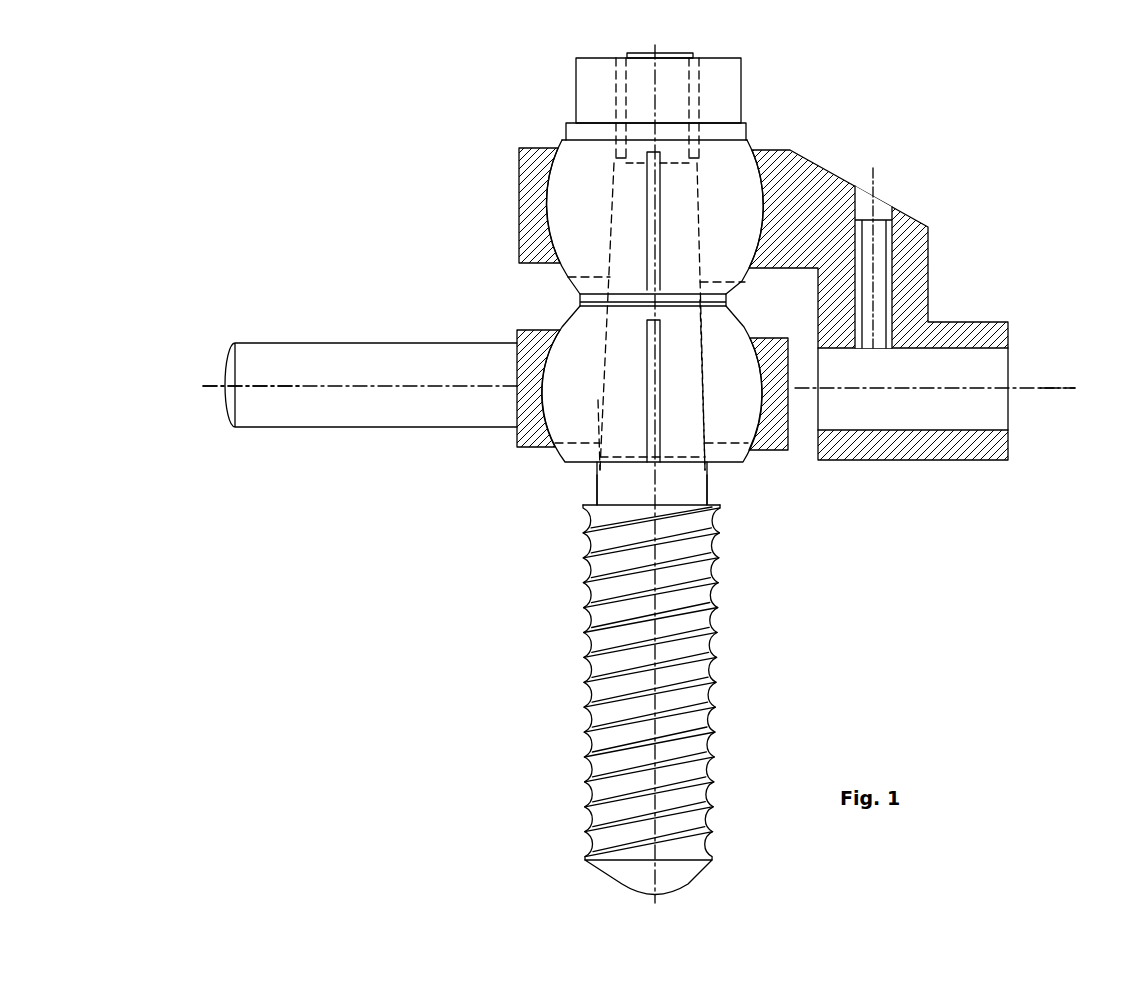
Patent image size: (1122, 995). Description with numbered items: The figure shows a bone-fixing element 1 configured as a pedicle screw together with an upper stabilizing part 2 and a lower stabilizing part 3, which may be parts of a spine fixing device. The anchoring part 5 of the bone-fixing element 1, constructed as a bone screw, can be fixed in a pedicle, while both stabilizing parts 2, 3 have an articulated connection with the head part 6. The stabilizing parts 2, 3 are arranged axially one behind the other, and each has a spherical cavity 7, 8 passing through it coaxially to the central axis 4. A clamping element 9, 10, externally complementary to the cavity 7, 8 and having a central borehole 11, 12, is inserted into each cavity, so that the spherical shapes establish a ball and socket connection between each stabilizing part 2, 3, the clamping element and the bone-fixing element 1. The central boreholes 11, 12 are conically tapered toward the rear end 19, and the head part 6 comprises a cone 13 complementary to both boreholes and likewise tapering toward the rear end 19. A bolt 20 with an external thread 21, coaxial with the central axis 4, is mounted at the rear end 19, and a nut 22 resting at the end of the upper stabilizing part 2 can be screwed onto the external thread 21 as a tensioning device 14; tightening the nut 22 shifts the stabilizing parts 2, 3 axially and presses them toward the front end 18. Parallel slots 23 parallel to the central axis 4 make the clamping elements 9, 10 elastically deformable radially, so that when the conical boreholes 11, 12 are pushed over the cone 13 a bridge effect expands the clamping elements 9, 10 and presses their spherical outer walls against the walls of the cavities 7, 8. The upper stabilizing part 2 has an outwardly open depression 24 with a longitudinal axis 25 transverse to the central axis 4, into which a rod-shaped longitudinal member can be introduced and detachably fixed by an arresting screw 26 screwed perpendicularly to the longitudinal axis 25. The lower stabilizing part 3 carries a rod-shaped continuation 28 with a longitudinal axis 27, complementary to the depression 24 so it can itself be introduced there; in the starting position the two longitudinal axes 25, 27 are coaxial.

The bone-fixing element 1 is at (732, 581).
The upper stabilizing part 2 is at (798, 192).
The lower stabilizing part 3 is at (548, 405).
The central axis 4 is at (645, 678).
The anchoring part 5 is at (687, 737).
The head part 6 is at (682, 478).
The spherical cavity 7 is at (552, 198).
The spherical cavity 8 is at (545, 432).
The clamping element 9 is at (575, 247).
The clamping element 10 is at (573, 370).
The central borehole 11 is at (608, 220).
The central borehole 12 is at (600, 410).
The cone 13 is at (692, 372).
The tensioning device 14 is at (747, 97).
The front end 18 is at (635, 873).
The rear end 19 is at (640, 55).
The bolt 20 is at (643, 83).
The external thread 21 is at (695, 158).
The nut 22 is at (600, 110).
The parallel slots 23 is at (658, 342).
The depression 24 is at (993, 368).
The longitudinal axis 25 is at (1052, 392).
The arresting screw 26 is at (880, 230).
The longitudinal axis 27 is at (263, 385).
The rod-shaped continuation 28 is at (327, 412).